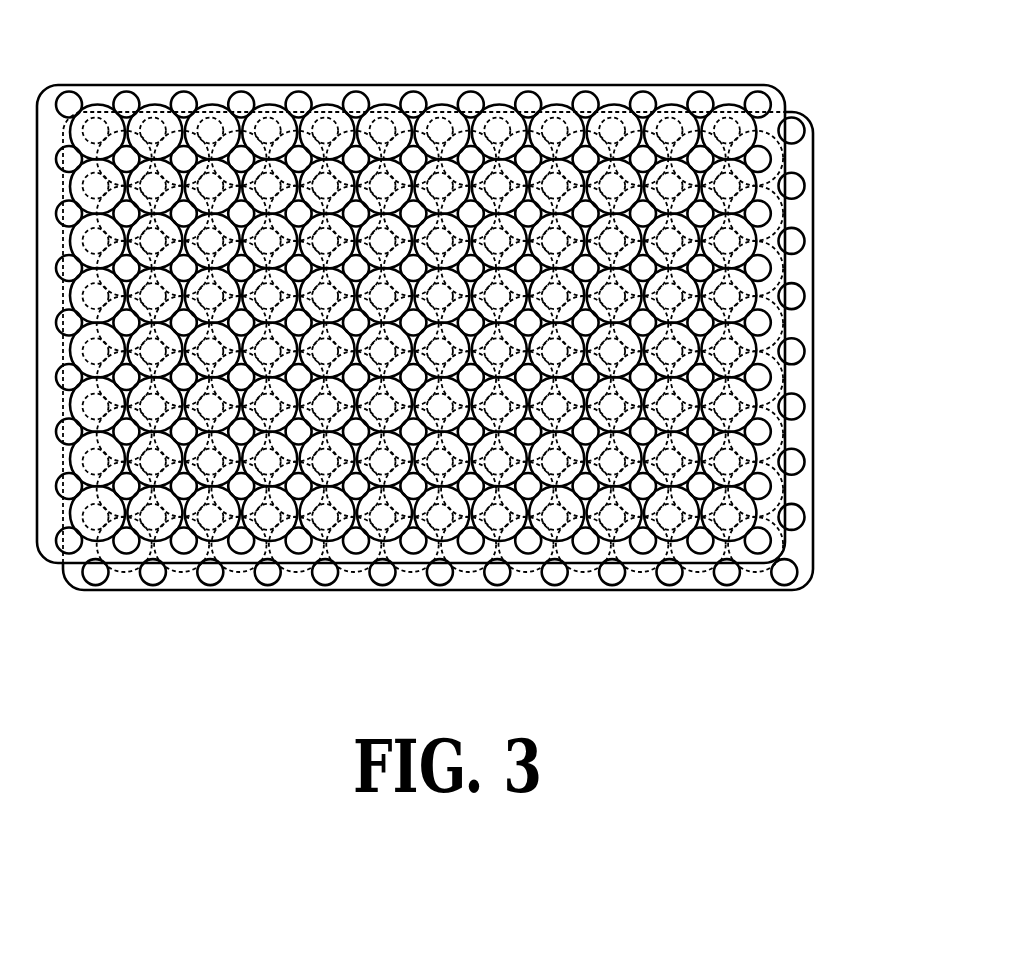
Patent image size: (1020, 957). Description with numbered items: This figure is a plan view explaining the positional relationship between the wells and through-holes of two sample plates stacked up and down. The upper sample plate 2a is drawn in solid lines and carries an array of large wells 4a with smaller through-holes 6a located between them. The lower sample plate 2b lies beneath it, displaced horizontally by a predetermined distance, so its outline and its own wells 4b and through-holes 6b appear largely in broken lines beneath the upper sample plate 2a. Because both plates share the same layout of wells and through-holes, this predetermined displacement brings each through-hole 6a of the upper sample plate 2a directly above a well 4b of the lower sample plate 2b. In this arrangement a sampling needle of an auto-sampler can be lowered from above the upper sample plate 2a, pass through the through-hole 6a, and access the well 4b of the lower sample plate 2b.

The upper sample plate 2a is at (672, 84).
The lower sample plate 2b is at (812, 257).
The well 4a is at (730, 185).
The well 4b is at (783, 320).
The through-hole 6a is at (758, 100).
The through-hole 6b is at (790, 348).